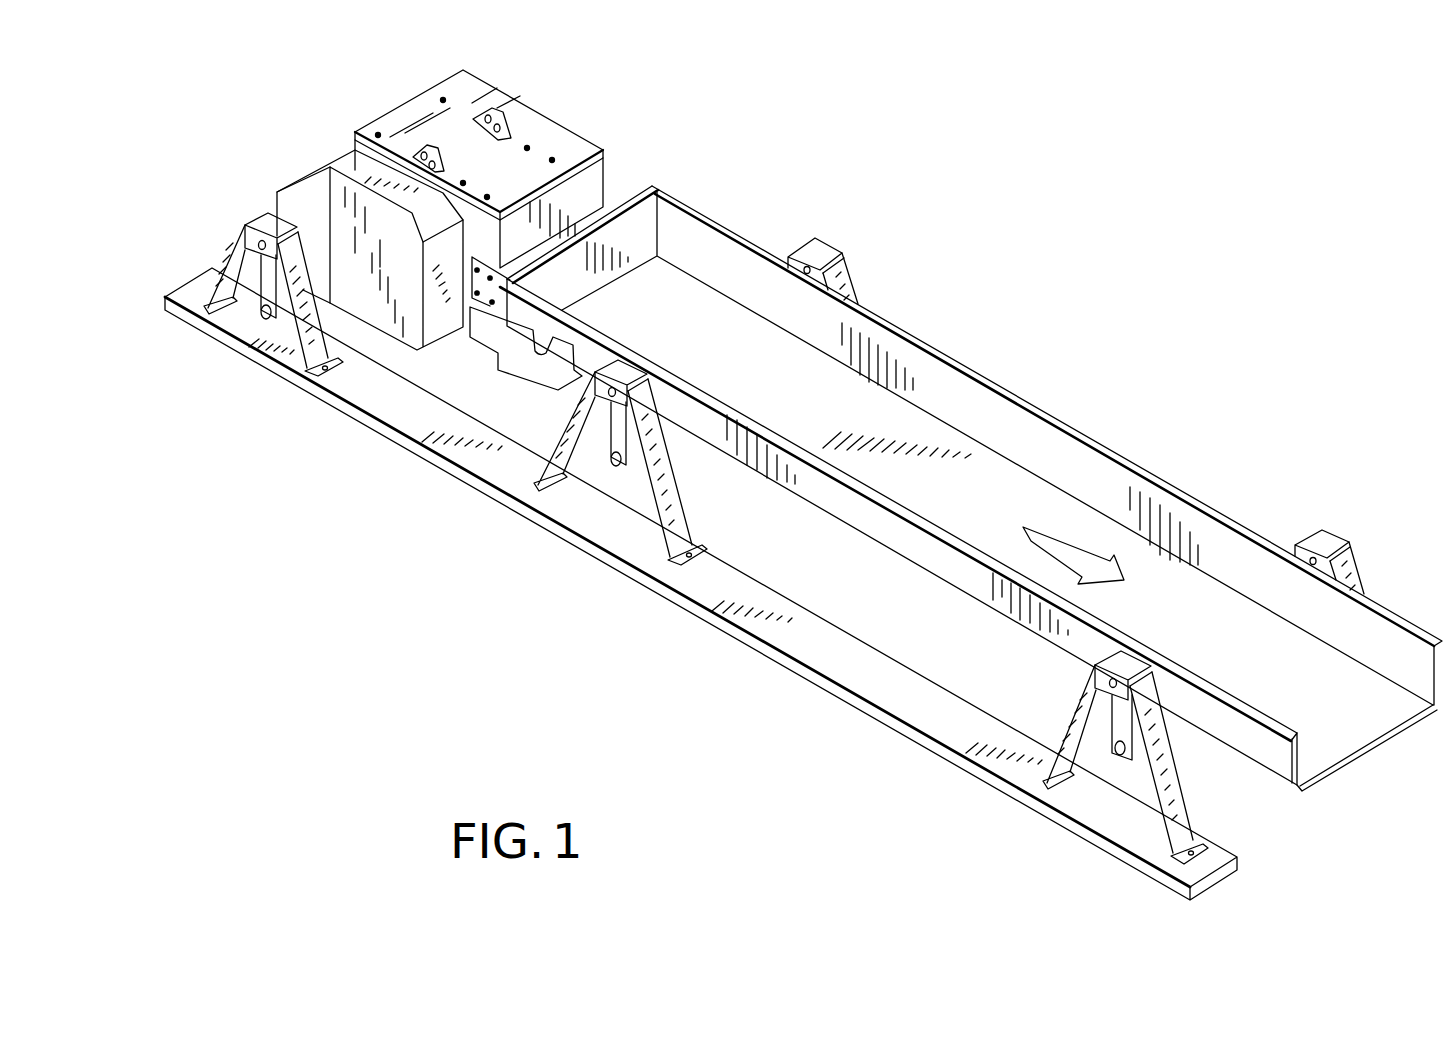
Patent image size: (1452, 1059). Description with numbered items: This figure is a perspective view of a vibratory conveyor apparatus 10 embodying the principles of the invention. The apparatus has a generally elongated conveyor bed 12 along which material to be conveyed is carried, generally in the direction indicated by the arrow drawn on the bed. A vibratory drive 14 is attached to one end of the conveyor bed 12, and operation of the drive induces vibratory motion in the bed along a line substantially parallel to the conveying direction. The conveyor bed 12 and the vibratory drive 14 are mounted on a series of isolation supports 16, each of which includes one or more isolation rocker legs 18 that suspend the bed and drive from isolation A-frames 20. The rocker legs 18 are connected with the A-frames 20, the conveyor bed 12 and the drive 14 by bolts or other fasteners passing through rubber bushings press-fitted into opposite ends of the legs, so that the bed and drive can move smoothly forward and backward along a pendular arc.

The vibratory conveyor apparatus 10 is at (1139, 273).
The conveyor bed 12 is at (1036, 402).
The vibratory drive 14 is at (498, 84).
The isolation supports 16 is at (243, 221).
The isolation rocker legs 18 is at (257, 304).
The isolation A-frames 20 is at (306, 366).